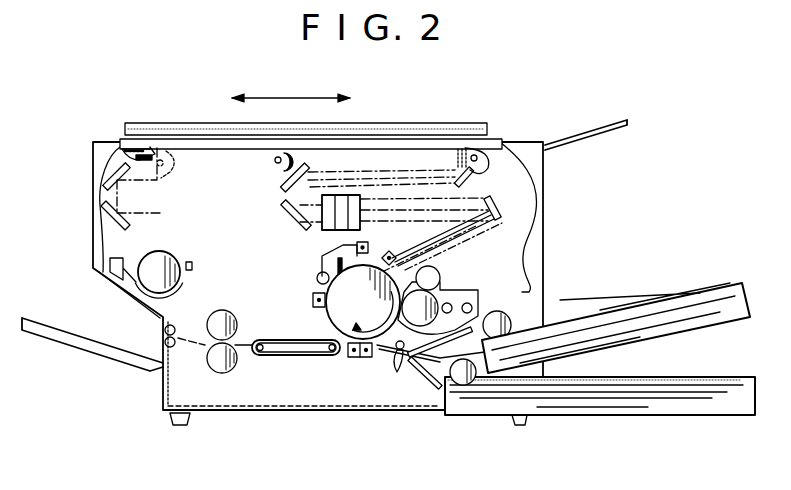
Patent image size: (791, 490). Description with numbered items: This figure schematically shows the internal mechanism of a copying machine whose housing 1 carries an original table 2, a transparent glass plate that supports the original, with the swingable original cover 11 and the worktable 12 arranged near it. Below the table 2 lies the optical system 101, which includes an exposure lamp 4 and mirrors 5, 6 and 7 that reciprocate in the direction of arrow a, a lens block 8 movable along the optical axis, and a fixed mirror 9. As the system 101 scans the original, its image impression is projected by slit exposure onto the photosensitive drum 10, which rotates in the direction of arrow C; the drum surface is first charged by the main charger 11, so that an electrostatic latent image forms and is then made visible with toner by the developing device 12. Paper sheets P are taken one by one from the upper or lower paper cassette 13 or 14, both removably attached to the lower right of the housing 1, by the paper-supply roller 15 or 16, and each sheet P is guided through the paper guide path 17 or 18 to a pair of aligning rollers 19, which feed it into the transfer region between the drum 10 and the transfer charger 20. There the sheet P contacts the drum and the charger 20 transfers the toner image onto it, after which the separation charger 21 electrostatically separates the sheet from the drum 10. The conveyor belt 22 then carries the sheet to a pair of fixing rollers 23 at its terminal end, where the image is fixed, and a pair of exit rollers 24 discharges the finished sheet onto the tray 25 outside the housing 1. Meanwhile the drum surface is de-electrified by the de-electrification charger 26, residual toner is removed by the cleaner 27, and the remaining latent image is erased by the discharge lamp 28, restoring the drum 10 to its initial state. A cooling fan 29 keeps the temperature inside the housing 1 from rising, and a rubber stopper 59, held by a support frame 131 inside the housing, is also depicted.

The housing 1 is at (548, 192).
The original table 2 is at (210, 150).
The exposure lamp 4 is at (275, 163).
The mirror 5 is at (476, 178).
The mirror 6 is at (285, 187).
The mirror 7 is at (296, 224).
The lens block 8 is at (321, 234).
The fixed mirror 9 is at (501, 206).
The photosensitive drum 10 is at (338, 303).
The main charger 11 is at (407, 123).
The developing device 12 is at (465, 290).
The upper paper cassette 13 is at (740, 318).
The lower paper cassette 14 is at (690, 416).
The paper-supply roller 15 is at (508, 316).
The paper-supply roller 16 is at (463, 386).
The paper guide path 17 is at (478, 322).
The paper guide path 18 is at (428, 375).
The aligning rollers 19 is at (397, 373).
The transfer charger 20 is at (395, 348).
The separation charger 21 is at (352, 358).
The conveyor belt 22 is at (298, 356).
The fixing rollers 23 is at (235, 303).
The exit rollers 24 is at (178, 300).
The tray 25 is at (100, 355).
The de-electrification charger 26 is at (313, 300).
The cleaner 27 is at (317, 278).
The discharge lamp 28 is at (362, 256).
The cooling fan 29 is at (181, 262).
The stopper 59 is at (149, 148).
The optical system 101 is at (269, 213).
The support frame 131 is at (147, 158).
The arrow a is at (290, 97).
The paper sheets P is at (688, 300).
The arrow C is at (343, 312).